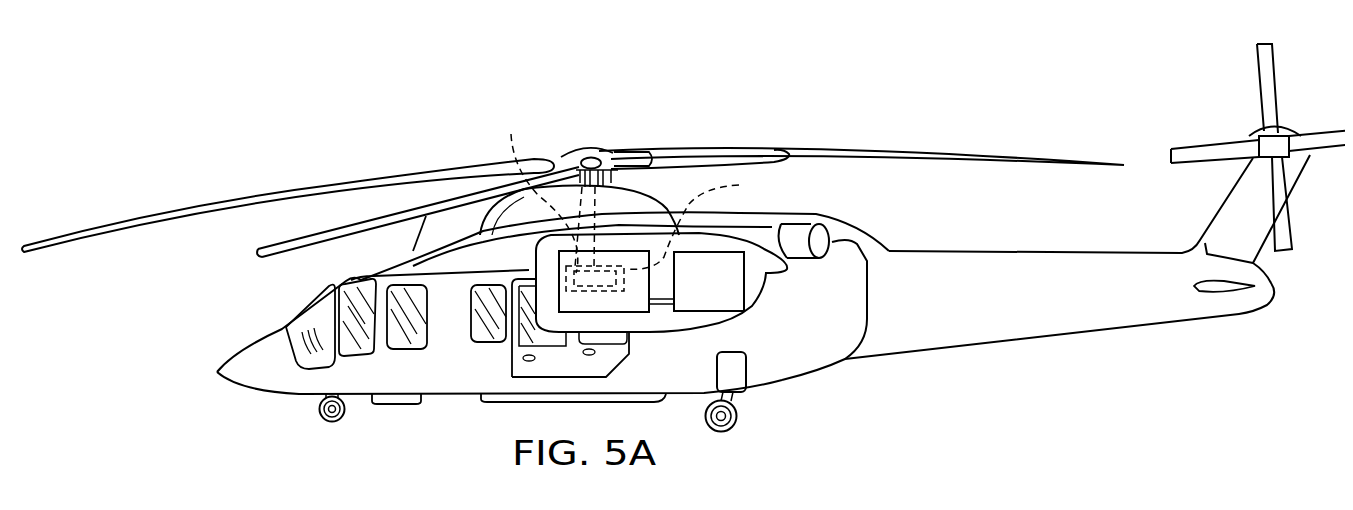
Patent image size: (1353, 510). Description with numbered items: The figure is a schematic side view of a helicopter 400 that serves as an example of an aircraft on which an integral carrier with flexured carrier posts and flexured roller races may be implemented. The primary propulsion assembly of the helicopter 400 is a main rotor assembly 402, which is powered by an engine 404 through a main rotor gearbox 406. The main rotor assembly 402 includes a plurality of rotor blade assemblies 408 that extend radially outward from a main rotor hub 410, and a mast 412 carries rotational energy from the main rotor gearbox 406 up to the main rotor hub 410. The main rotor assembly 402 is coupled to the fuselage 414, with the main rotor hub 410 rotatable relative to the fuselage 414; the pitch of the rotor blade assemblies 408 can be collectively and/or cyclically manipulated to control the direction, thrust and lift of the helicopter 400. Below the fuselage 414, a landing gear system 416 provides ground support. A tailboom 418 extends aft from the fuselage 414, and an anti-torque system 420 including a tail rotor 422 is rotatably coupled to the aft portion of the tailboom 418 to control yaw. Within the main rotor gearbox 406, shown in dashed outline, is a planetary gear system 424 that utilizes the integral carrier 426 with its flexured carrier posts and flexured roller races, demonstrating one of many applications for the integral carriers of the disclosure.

The helicopter 400 is at (657, 108).
The main rotor assembly 402 is at (594, 143).
The engine 404 is at (757, 282).
The main rotor gearbox 406 is at (641, 315).
The rotor blade assemblies 408 is at (283, 190).
The main rotor hub 410 is at (580, 153).
The mast 412 is at (666, 232).
The fuselage 414 is at (442, 396).
The landing gear system 416 is at (738, 417).
The tailboom 418 is at (1026, 338).
The anti-torque system 420 is at (1247, 122).
The tail rotor 422 is at (1277, 78).
The planetary gear system 424 is at (703, 221).
The integral carrier 426 is at (542, 190).